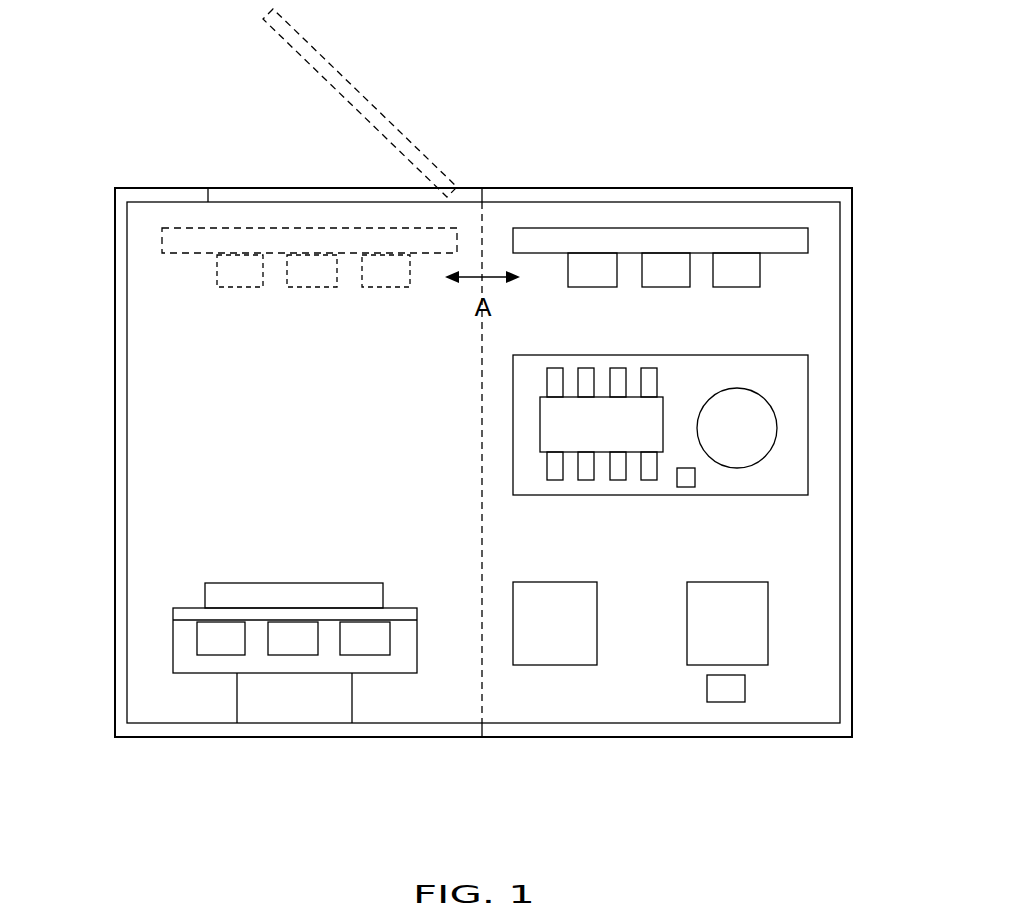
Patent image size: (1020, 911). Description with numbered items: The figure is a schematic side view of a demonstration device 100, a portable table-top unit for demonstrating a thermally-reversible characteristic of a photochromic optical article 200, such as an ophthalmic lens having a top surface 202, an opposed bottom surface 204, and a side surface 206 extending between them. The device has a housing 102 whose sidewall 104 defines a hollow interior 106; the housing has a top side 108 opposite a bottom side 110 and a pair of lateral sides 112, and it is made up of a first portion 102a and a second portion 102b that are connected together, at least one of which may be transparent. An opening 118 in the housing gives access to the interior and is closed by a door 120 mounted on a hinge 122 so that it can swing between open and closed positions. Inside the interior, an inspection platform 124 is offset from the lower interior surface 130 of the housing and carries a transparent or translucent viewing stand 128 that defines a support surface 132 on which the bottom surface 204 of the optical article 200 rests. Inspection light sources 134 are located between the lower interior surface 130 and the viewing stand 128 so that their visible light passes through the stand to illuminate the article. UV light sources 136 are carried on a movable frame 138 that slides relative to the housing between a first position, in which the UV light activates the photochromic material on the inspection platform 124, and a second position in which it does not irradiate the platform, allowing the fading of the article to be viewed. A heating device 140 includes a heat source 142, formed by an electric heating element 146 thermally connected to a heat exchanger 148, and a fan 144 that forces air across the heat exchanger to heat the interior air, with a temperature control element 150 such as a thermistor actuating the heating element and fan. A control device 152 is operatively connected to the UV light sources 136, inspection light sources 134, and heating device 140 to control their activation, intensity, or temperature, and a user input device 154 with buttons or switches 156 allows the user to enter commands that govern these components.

The demonstration device 100 is at (702, 128).
The housing 102 is at (852, 255).
The first portion 102a is at (285, 737).
The second portion 102b is at (598, 737).
The sidewall 104 is at (843, 364).
The hollow interior 106 is at (327, 416).
The top side 108 is at (768, 187).
The bottom side 110 is at (752, 737).
The lateral sides 112 is at (852, 513).
The opening 118 is at (215, 173).
The door 120 is at (343, 77).
The hinge 122 is at (456, 188).
The inspection platform 124 is at (417, 660).
The viewing stand 128 is at (405, 617).
The lower interior surface 130 is at (420, 723).
The support surface 132 is at (188, 607).
The inspection light source 134 is at (202, 652).
The UV light source 136 is at (221, 284).
The movable frame 138 is at (200, 238).
The heating device 140 is at (643, 355).
The heat source 142 is at (536, 374).
The fan 144 is at (737, 388).
The electric heating element 146 is at (579, 438).
The heat exchanger 148 is at (555, 480).
The temperature control element 150 is at (689, 487).
The control device 152 is at (597, 600).
The user input device 154 is at (768, 590).
The buttons or switches 156 is at (745, 683).
The optical article 200 is at (362, 568).
The top surface 202 is at (255, 583).
The bottom surface 204 is at (375, 605).
The side surface 206 is at (205, 607).